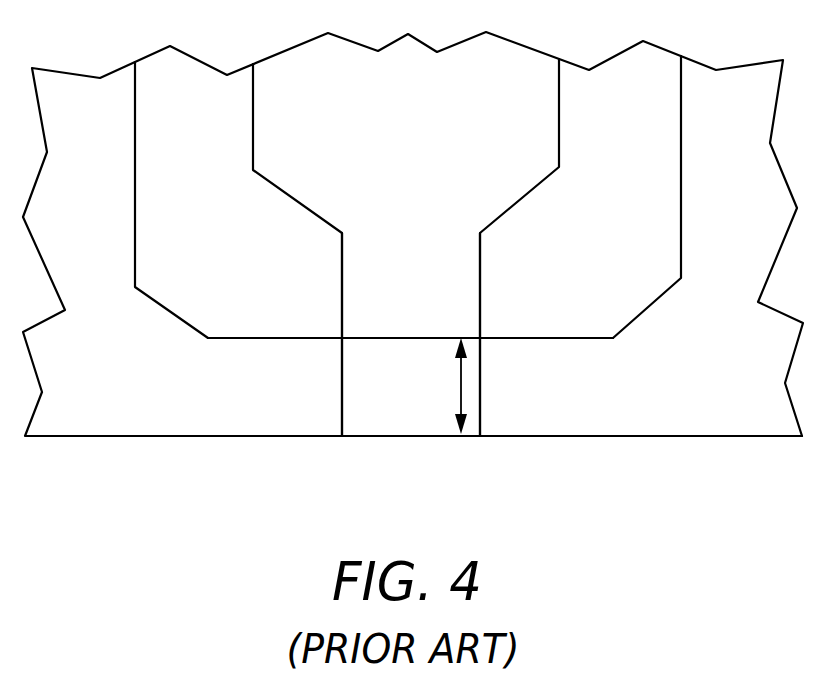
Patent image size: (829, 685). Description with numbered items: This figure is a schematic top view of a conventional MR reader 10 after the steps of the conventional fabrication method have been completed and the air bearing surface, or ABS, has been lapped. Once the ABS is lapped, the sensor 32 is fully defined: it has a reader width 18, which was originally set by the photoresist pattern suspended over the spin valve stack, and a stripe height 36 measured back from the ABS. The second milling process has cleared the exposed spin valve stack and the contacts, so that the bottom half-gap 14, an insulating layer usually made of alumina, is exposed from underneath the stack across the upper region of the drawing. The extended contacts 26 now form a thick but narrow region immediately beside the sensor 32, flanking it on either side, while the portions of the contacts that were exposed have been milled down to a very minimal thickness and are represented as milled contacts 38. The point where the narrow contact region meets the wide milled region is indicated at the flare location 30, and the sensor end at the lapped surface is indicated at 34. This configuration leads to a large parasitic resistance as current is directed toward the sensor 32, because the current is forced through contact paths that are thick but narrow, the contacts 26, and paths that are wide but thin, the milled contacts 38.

The MR reader 10 is at (230, 497).
The bottom half-gap 14 is at (386, 125).
The reader width 18 is at (325, 389).
The extended contacts 26 is at (93, 405).
The flare point 30 is at (365, 337).
The sensor 32 is at (383, 395).
The pole tip end at ABS 34 is at (413, 437).
The stripe height 36 is at (462, 377).
The milled contacts 38 is at (201, 270).
The air bearing surface ABS is at (690, 437).